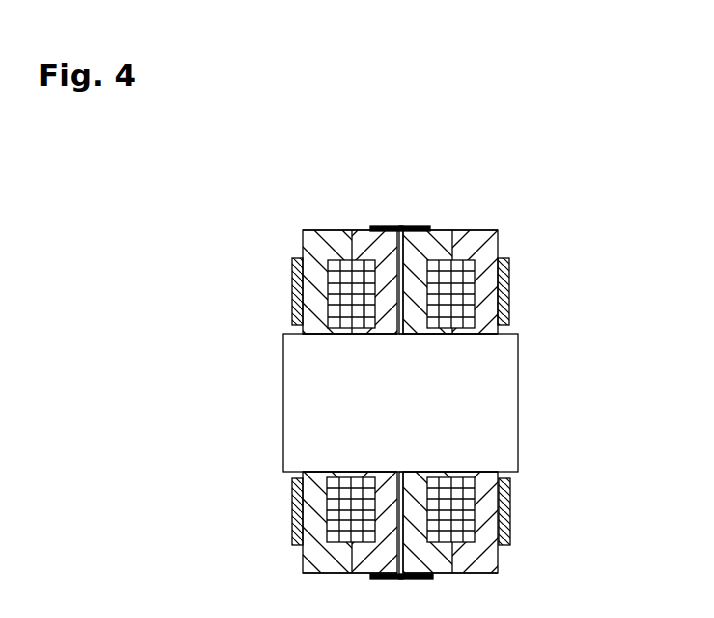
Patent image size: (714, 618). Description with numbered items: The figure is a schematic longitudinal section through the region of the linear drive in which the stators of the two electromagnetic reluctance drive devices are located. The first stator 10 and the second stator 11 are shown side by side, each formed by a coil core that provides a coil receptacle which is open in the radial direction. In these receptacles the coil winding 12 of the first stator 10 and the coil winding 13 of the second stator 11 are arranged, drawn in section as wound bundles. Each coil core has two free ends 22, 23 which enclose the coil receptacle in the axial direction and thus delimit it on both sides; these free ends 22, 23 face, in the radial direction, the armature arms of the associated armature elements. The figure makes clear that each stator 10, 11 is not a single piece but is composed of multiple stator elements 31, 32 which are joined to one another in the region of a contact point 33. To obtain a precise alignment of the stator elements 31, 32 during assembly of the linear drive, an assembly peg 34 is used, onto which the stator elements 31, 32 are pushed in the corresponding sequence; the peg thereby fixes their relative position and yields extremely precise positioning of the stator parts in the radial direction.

The stator 10 is at (315, 342).
The stator 11 is at (490, 343).
The coil winding 12 is at (330, 292).
The coil winding 13 is at (455, 300).
The free end 22 is at (316, 325).
The free end 23 is at (385, 328).
The stator element 31 is at (317, 235).
The stator element 32 is at (370, 230).
The contact point 33 is at (345, 247).
The assembly peg 34 is at (498, 430).